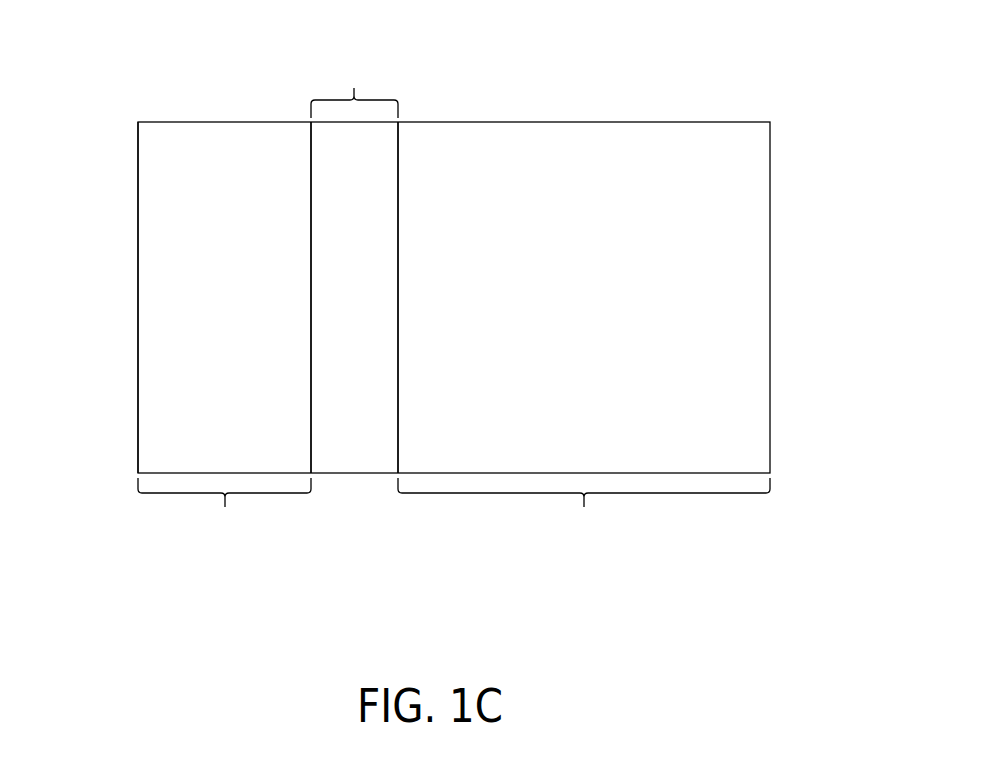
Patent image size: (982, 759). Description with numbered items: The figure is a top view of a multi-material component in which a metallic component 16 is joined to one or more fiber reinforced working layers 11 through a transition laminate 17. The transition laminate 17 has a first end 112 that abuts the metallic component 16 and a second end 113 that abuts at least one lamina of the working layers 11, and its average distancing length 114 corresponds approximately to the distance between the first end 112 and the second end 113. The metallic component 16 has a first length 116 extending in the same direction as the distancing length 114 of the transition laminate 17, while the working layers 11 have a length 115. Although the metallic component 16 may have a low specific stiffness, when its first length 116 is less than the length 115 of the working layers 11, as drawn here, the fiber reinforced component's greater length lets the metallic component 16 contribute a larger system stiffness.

The working layers 11 is at (743, 243).
The metallic component 16 is at (180, 148).
The transition laminate 17 is at (357, 461).
The first end 112 is at (311, 166).
The second end 113 is at (398, 165).
The average distancing length 114 is at (354, 85).
The length 115 is at (584, 511).
The first length 116 is at (224, 511).